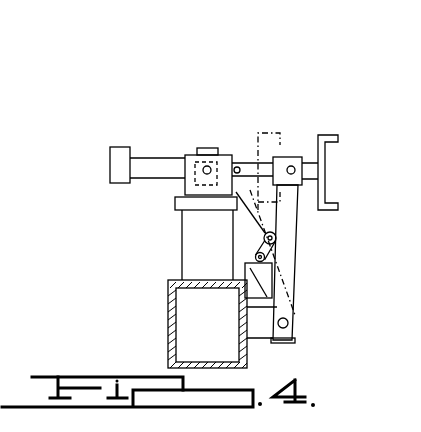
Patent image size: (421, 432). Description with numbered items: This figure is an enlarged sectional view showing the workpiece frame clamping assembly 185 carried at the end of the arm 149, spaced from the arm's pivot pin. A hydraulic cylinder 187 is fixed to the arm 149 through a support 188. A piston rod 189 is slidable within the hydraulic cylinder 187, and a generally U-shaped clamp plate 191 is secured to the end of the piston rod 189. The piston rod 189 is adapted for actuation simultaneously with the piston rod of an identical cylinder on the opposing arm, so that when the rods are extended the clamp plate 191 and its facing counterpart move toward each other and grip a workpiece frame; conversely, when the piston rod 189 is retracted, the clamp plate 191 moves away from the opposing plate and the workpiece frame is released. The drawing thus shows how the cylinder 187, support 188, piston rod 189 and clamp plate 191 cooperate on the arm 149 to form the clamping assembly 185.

The workpiece frame clamping assembly 185 is at (242, 100).
The hydraulic cylinder 187 is at (156, 157).
The support 188 is at (182, 228).
The piston rod 189 is at (262, 218).
The U-shaped clamp plate 191 is at (324, 135).
The arm 149 is at (170, 307).